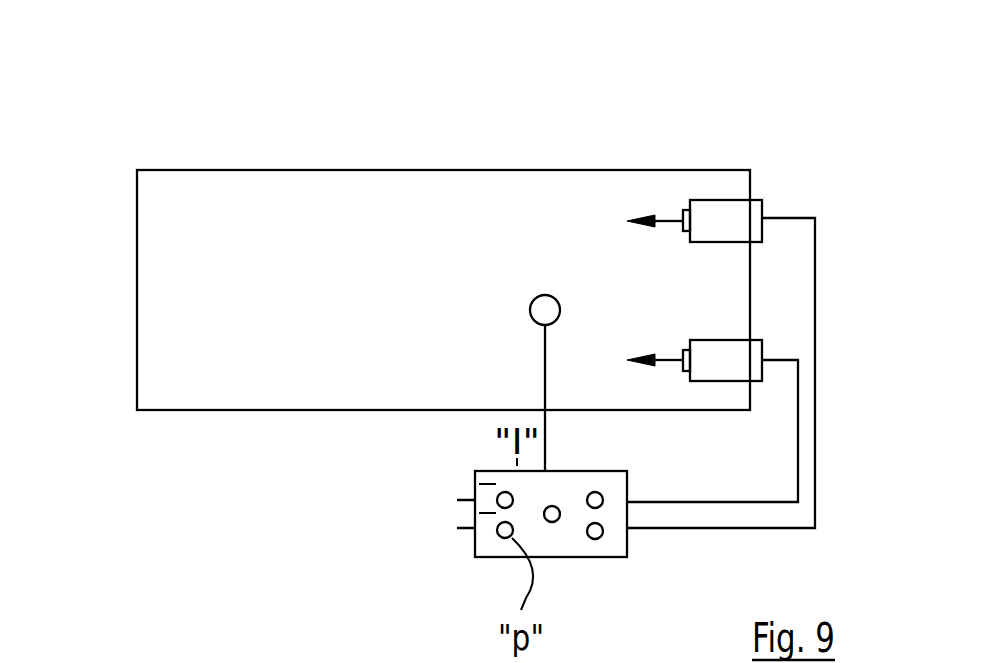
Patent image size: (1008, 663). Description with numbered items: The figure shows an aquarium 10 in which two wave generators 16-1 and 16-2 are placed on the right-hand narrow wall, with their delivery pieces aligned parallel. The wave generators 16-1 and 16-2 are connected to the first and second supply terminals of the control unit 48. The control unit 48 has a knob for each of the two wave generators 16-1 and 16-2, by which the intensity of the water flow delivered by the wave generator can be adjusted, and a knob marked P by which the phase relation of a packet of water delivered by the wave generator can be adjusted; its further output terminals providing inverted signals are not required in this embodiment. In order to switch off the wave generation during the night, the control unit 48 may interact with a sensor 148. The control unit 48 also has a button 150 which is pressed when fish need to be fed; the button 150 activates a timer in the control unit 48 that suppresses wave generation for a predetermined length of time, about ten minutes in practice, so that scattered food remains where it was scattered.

The aquarium 10 is at (503, 170).
The wave generator 16-1 is at (748, 225).
The wave generator 16-2 is at (748, 372).
The control unit 48 is at (577, 556).
The sensor 148 is at (535, 318).
The button 150 is at (552, 506).